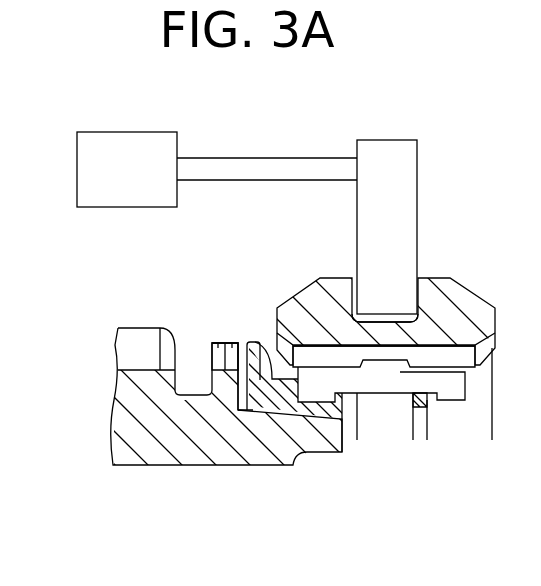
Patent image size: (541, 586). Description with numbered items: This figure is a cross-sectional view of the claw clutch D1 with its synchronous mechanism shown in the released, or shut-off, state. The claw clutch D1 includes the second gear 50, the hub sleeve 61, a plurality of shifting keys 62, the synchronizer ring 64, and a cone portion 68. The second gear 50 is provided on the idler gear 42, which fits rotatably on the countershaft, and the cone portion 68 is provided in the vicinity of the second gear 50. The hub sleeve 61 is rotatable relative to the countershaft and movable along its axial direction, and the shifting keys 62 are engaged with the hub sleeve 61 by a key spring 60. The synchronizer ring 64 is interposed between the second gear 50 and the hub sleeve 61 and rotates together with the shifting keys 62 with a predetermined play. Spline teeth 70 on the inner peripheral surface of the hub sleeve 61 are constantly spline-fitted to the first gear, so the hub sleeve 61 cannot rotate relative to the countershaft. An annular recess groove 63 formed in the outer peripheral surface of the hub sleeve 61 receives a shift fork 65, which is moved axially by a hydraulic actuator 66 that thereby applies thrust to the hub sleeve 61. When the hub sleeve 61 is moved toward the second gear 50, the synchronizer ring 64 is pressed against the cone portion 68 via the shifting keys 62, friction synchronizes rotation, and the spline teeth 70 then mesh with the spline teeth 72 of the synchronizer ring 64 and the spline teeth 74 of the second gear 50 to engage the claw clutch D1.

The claw clutch D1 is at (84, 268).
The idler gear 42 is at (152, 445).
The second gear 50 is at (220, 385).
The key spring 60 is at (433, 407).
The hub sleeve 61 is at (455, 303).
The shifting keys 62 is at (387, 378).
The recess groove 63 is at (383, 312).
The synchronizer ring 64 is at (265, 445).
The shift fork 65 is at (400, 207).
The hydraulic actuator 66 is at (235, 112).
The cone portion 68 is at (318, 447).
The spline teeth 70 is at (443, 358).
The spline teeth 72 is at (261, 345).
The spline teeth 74 is at (220, 345).